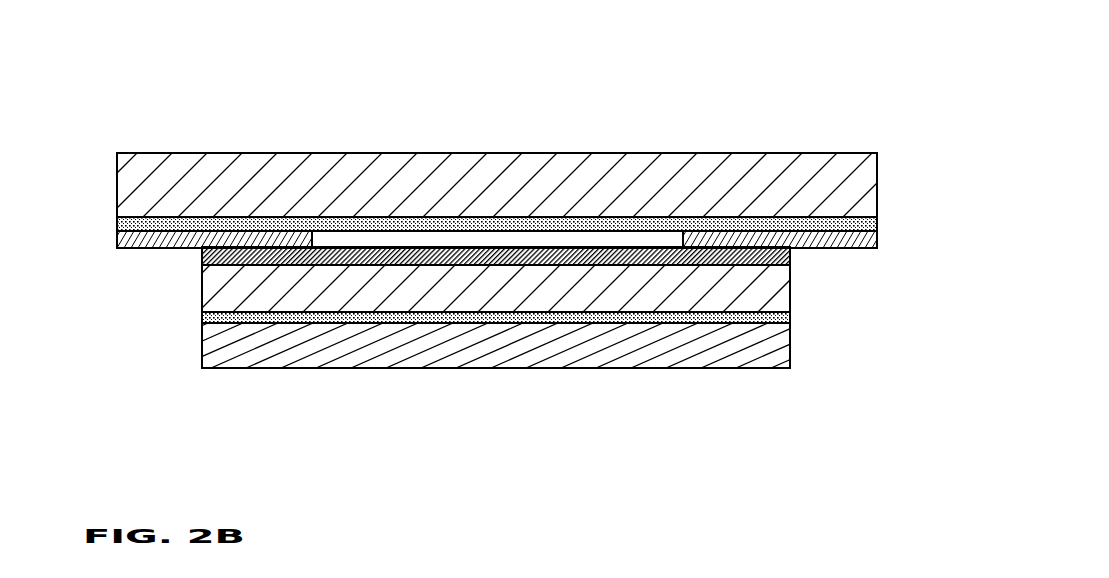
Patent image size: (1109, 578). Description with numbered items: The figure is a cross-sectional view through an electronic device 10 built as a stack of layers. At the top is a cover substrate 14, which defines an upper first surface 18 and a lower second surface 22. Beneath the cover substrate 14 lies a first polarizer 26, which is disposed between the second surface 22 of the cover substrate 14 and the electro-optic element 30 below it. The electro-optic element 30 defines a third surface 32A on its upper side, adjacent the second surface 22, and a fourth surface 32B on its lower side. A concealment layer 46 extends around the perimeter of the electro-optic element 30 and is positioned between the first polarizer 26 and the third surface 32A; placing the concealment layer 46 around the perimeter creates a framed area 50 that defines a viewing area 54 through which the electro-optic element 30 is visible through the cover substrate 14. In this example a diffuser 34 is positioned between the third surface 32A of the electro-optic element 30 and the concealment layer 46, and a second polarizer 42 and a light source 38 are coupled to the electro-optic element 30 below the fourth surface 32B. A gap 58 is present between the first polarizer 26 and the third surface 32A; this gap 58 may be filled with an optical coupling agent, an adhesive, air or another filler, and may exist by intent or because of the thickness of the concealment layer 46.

The electronic device 10 is at (673, 102).
The cover substrate 14 is at (173, 173).
The first surface 18 is at (337, 153).
The second surface 22 is at (530, 217).
The first polarizer 26 is at (125, 224).
The electro-optic element 30 is at (758, 290).
The third surface 32A is at (397, 265).
The fourth surface 32B is at (595, 312).
The diffuser 34 is at (202, 257).
The light source 38 is at (752, 345).
The second polarizer 42 is at (778, 317).
The concealment layer 46 is at (150, 248).
The framed area 50 is at (762, 233).
The viewing area 54 is at (467, 203).
The gap 58 is at (610, 233).